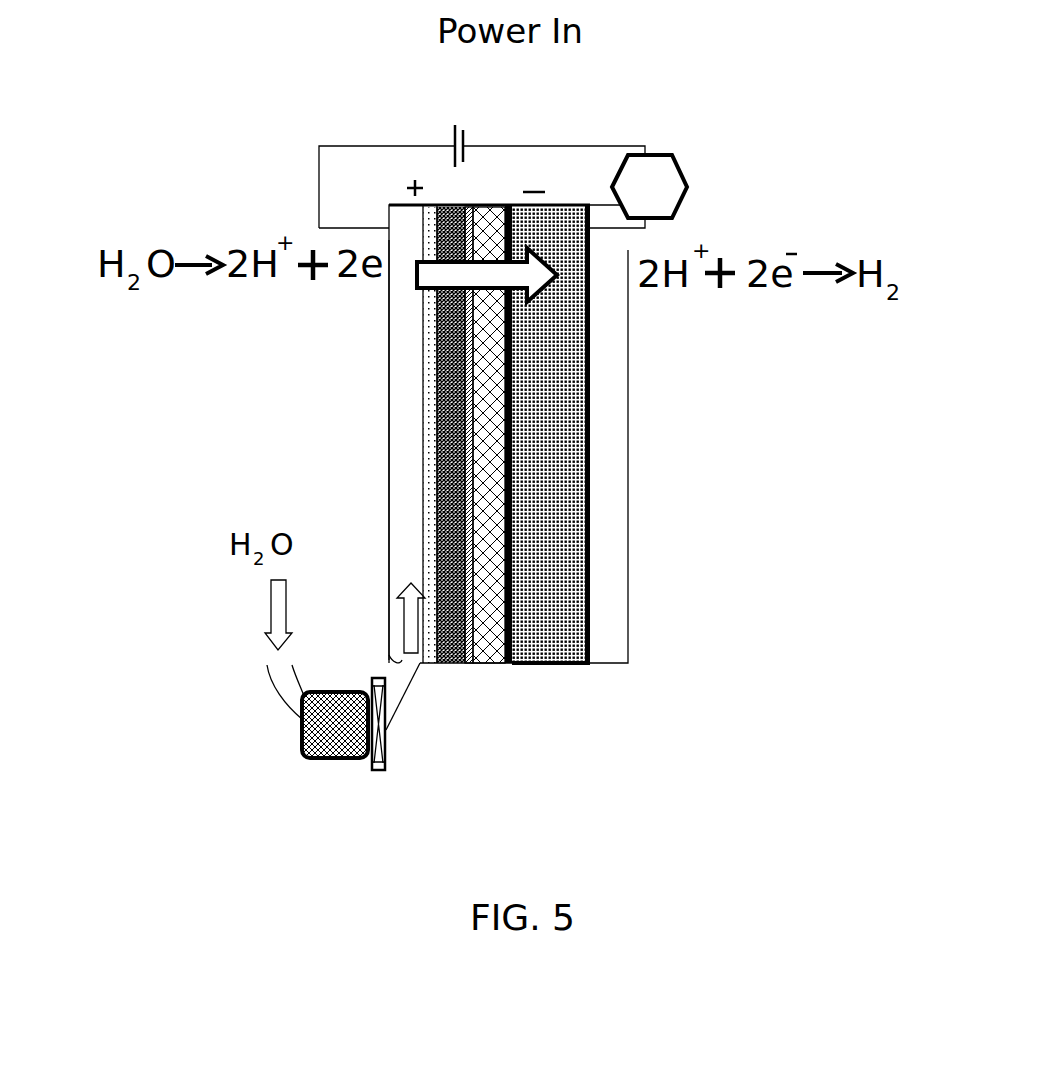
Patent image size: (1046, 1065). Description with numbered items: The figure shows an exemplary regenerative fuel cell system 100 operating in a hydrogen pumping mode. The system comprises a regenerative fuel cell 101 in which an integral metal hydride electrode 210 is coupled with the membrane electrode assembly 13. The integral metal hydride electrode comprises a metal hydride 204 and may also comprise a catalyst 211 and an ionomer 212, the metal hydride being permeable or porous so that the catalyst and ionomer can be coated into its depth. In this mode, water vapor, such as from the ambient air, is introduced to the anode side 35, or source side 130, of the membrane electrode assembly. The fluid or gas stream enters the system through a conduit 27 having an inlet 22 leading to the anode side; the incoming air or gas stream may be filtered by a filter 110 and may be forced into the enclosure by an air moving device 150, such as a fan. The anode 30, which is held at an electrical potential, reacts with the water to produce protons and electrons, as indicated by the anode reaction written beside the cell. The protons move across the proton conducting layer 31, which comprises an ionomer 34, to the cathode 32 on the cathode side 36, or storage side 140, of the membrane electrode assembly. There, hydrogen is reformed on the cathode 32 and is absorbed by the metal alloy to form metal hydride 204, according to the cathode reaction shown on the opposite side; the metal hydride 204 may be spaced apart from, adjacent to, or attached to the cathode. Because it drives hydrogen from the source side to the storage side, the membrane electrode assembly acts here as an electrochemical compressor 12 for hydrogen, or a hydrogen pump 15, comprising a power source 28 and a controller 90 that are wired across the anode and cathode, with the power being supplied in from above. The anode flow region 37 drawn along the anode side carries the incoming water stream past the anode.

The electrochemical compressor 12 is at (307, 143).
The regenerative fuel cell system 100 is at (353, 162).
The regenerative fuel cell 101 is at (315, 220).
The hydrogen pump 15 is at (412, 240).
The power source 28 is at (503, 146).
The controller 90 is at (643, 180).
The anode 30 is at (423, 415).
The source side 130 is at (425, 450).
The anode flow field 37 is at (437, 332).
The anode side 35 is at (437, 380).
The membrane electrode assembly 13 is at (440, 500).
The proton conducting layer 31 is at (452, 663).
The ionomer 34 is at (482, 637).
The cathode 32 is at (523, 432).
The cathode side 36 is at (520, 360).
The storage side 140 is at (572, 383).
The integral metal hydride electrode 210 is at (562, 503).
The catalyst 211 is at (557, 550).
The ionomer 212 is at (555, 595).
The metal hydride 204 is at (570, 633).
The inlet 22 is at (402, 660).
The conduit 27 is at (278, 672).
The filter 110 is at (302, 738).
The air moving device 150 is at (373, 773).